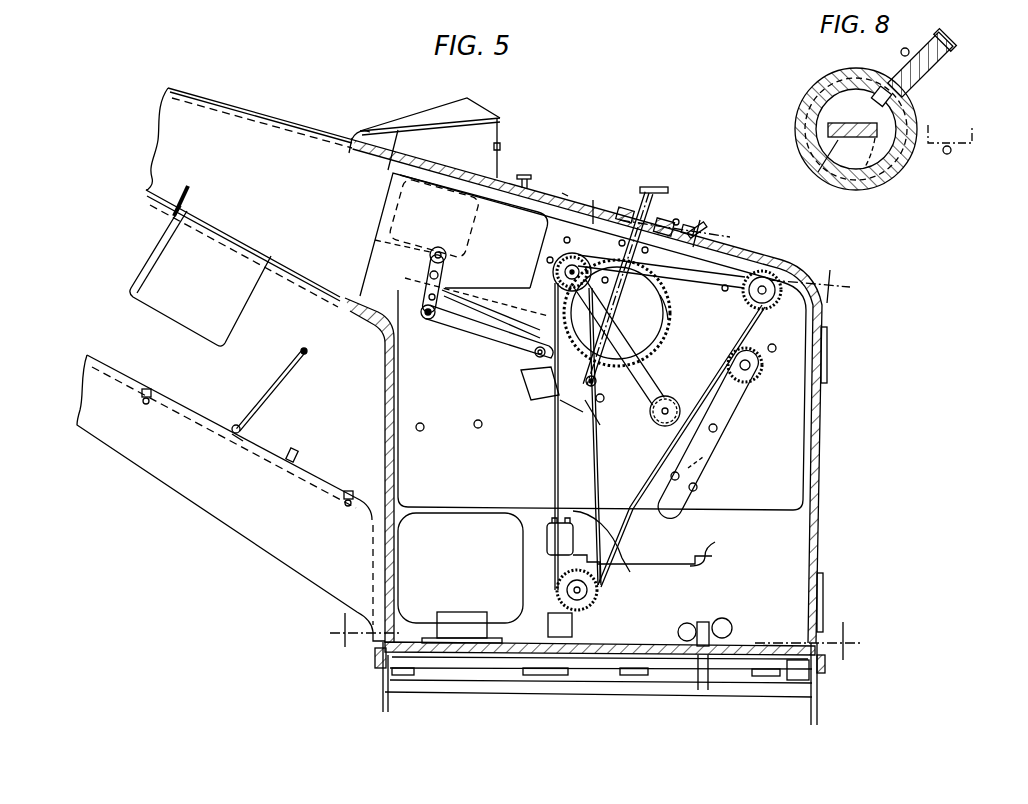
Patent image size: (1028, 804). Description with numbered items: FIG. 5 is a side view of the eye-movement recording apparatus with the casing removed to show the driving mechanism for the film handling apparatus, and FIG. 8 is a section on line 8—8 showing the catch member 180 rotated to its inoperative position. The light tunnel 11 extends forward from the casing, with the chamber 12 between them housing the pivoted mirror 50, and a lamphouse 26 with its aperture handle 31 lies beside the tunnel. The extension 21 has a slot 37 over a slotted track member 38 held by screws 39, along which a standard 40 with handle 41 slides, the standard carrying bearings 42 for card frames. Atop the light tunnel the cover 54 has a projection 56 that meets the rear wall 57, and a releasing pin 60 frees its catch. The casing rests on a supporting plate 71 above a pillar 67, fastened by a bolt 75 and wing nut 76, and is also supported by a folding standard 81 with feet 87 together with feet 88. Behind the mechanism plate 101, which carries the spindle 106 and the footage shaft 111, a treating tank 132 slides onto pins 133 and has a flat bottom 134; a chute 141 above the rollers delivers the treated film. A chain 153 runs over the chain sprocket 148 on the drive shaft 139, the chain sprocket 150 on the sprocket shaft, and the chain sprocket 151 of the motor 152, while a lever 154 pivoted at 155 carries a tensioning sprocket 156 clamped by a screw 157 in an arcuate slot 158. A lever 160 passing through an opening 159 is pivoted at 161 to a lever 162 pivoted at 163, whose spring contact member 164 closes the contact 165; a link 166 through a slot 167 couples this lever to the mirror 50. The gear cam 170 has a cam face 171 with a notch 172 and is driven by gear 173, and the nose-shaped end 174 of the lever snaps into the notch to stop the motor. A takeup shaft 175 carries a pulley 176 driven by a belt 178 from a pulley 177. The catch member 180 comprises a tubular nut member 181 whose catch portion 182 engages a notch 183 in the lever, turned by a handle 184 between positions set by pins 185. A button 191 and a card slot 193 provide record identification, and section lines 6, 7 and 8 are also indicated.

In FIG. 5, the light tunnel 11 is at (251, 131).
In FIG. 5, the chamber 12 is at (350, 305).
In FIG. 5, the extension 21 is at (167, 479).
In FIG. 5, the lamphouse 26 is at (243, 318).
In FIG. 5, the handle 31 is at (190, 181).
In FIG. 5, the slot 37 is at (191, 410).
In FIG. 5, the slotted track member 38 is at (196, 416).
In FIG. 5, the screws 39 is at (150, 391).
In FIG. 5, the standard 40 is at (250, 437).
In FIG. 5, the handle 41 is at (298, 456).
In FIG. 5, the bearings 42 is at (236, 426).
In FIG. 5, the mirror 50 is at (422, 280).
In FIG. 5, the cover 54 is at (444, 112).
In FIG. 5, the projection 56 is at (358, 134).
In FIG. 5, the rear wall 57 is at (349, 146).
In FIG. 5, the releasing pin 60 is at (498, 140).
In FIG. 5, the pillar 67 is at (811, 712).
In FIG. 5, the supporting plate 71 is at (672, 697).
In FIG. 5, the bolt 75 is at (703, 621).
In FIG. 5, the wing nut 76 is at (724, 623).
In FIG. 5, the standard 81 is at (380, 664).
In FIG. 5, the feet 87 is at (385, 688).
In FIG. 5, the feet 88 is at (826, 670).
In FIG. 5, the mechanism plate 101 is at (786, 511).
In FIG. 5, the spindle 106 is at (481, 427).
In FIG. 5, the oscillatable shaft 111 is at (424, 430).
In FIG. 5, the treating tank 132 is at (718, 562).
In FIG. 5, the pins 133 is at (774, 344).
In FIG. 5, the flat bottom 134 is at (688, 568).
In FIG. 5, the drive shaft 139 is at (780, 288).
In FIG. 5, the chute 141 is at (755, 253).
In FIG. 5, the chain sprocket 148 is at (746, 298).
In FIG. 5, the chain sprocket 150 is at (573, 262).
In FIG. 5, the chain sprocket 151 is at (600, 598).
In FIG. 5, the motor 152 is at (460, 578).
In FIG. 5, the chain 153 is at (559, 488).
In FIG. 5, the lever 154 is at (737, 406).
In FIG. 5, the pivot 155 is at (718, 429).
In FIG. 5, the sprocket 156 is at (762, 368).
In FIG. 5, the screw 157 is at (705, 470).
In FIG. 5, the arcuate slot 158 is at (528, 394).
In FIG. 5, the opening 159 is at (607, 207).
In FIG. 8, the opening 159 is at (806, 134).
In FIG. 5, the lever 160 is at (661, 194).
In FIG. 8, the lever 160 is at (840, 138).
In FIG. 5, the pivot 161 is at (595, 402).
In FIG. 5, the lever 162 is at (496, 348).
In FIG. 5, the pivot 163 is at (532, 356).
In FIG. 5, the spring contact member 164 is at (586, 415).
In FIG. 5, the contact 165 is at (560, 407).
In FIG. 5, the link 166 is at (425, 320).
In FIG. 5, the slot 167 is at (440, 250).
In FIG. 5, the gear cam 170 is at (670, 338).
In FIG. 5, the cam face 171 is at (664, 306).
In FIG. 5, the notch 172 is at (560, 316).
In FIG. 5, the gear 173 is at (560, 296).
In FIG. 5, the nose-shaped end 174 is at (596, 382).
In FIG. 5, the takeup shaft 175 is at (662, 426).
In FIG. 5, the pulley 176 is at (678, 400).
In FIG. 5, the pulley 177 is at (565, 257).
In FIG. 5, the belt 178 is at (630, 346).
In FIG. 5, the catch member 180 is at (651, 180).
In FIG. 8, the catch member 180 is at (909, 168).
In FIG. 5, the tubular nut member 181 is at (675, 222).
In FIG. 8, the tubular nut member 181 is at (815, 90).
In FIG. 5, the catch portion 182 is at (660, 234).
In FIG. 8, the catch portion 182 is at (905, 112).
In FIG. 5, the notch 183 is at (680, 217).
In FIG. 8, the notch 183 is at (848, 190).
In FIG. 5, the handle 184 is at (703, 228).
In FIG. 8, the handle 184 is at (940, 70).
In FIG. 5, the pins 185 is at (722, 290).
In FIG. 8, the pins 185 is at (901, 52).
In FIG. 5, the button 191 is at (528, 176).
In FIG. 5, the slot 193 is at (565, 194).
In FIG. 5, the section line 6 is at (616, 216).
In FIG. 5, the section line 7 is at (594, 636).
In FIG. 5, the section line 8 is at (660, 214).